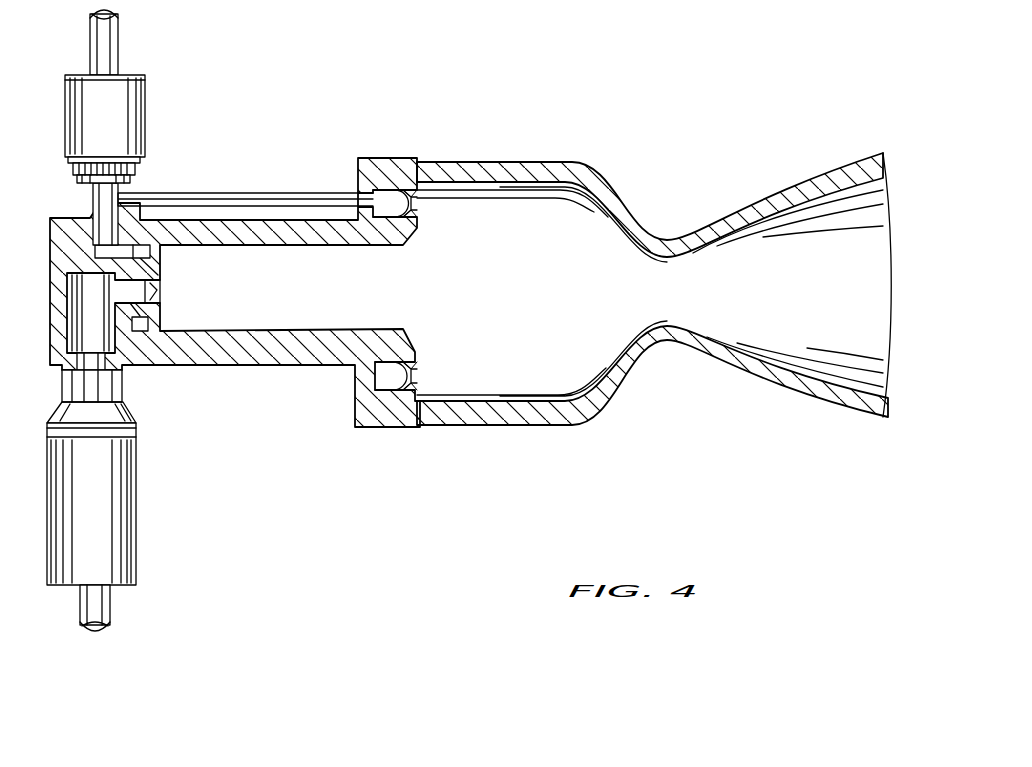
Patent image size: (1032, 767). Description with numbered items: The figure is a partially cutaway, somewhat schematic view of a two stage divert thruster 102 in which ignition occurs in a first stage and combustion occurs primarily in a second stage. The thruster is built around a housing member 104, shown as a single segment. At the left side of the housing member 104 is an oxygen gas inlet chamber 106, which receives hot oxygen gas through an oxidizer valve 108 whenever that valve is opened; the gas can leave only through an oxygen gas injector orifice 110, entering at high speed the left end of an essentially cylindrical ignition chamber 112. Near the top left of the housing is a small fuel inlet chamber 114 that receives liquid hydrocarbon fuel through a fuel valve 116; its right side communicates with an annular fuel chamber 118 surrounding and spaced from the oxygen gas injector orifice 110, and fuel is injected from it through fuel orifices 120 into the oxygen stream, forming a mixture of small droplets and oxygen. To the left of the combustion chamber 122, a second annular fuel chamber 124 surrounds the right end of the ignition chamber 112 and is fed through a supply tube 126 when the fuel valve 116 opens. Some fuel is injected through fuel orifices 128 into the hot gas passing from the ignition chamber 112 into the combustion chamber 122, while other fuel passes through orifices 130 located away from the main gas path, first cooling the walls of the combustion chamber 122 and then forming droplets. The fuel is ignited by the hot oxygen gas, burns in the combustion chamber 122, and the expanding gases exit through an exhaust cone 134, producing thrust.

The two stage divert thruster 102 is at (489, 451).
The housing member 104 is at (278, 352).
The oxygen gas inlet chamber 106 is at (93, 356).
The oxidizer valve 108 is at (137, 502).
The oxygen gas injector orifice 110 is at (169, 290).
The ignition chamber 112 is at (322, 299).
The fuel inlet chamber 114 is at (92, 252).
The fuel valve 116 is at (147, 127).
The annular fuel chamber 118 is at (150, 250).
The fuel orifices 120 is at (152, 270).
The combustion chamber 122 is at (548, 302).
The annular fuel chamber 124 is at (385, 191).
The supply tube 126 is at (288, 176).
The fuel orifices 128 is at (517, 247).
The orifices 130 is at (562, 216).
The exhaust cone 134 is at (830, 302).